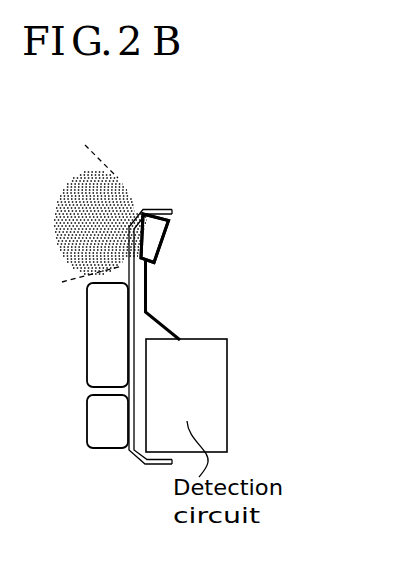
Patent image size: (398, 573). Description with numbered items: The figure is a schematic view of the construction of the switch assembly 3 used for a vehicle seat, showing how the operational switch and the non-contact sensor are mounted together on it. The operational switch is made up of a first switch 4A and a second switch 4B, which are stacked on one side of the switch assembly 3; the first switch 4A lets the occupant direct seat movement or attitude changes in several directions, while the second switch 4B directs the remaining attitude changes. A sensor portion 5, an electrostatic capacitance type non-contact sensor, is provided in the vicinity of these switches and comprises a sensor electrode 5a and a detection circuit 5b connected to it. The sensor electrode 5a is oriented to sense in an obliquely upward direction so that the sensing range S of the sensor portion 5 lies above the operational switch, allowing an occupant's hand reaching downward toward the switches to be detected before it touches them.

The sensing range S is at (82, 221).
The switch assembly 3 is at (163, 188).
The sensor portion 5 is at (84, 358).
The sensor electrode 5a is at (166, 235).
The detection circuit 5b is at (187, 338).
The first switch 4A is at (90, 422).
The second switch 4B is at (93, 348).